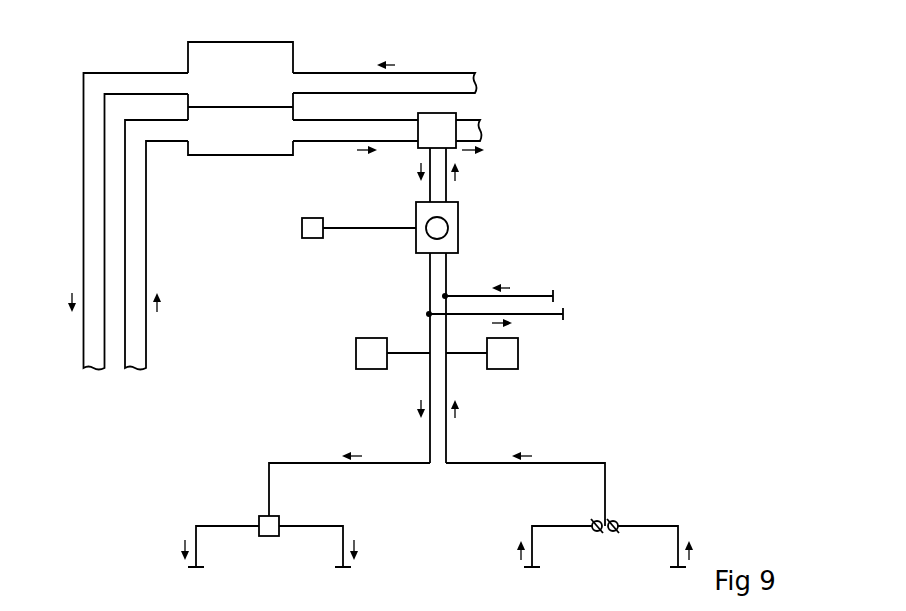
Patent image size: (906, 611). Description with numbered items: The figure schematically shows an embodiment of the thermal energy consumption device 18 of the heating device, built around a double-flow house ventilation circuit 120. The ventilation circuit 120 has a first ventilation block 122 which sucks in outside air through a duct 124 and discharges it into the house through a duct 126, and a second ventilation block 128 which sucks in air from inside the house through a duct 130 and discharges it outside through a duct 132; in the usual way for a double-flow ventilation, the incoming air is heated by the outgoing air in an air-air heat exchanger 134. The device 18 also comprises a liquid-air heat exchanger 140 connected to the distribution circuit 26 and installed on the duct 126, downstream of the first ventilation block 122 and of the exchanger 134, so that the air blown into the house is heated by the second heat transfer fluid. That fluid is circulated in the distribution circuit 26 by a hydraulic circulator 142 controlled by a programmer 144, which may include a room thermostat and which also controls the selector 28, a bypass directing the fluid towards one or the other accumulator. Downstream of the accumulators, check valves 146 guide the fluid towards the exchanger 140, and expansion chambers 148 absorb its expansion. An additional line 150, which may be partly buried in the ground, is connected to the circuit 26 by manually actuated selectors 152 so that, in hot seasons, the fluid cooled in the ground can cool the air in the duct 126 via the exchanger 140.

The thermal energy consumption device 18 is at (651, 166).
The distribution circuit 26 is at (600, 457).
The selector 28 is at (267, 536).
The double-flow house ventilation circuit 120 is at (284, 36).
The first ventilation block 122 is at (245, 142).
The duct 124 is at (147, 242).
The duct 126 is at (386, 118).
The second ventilation block 128 is at (221, 50).
The duct 130 is at (438, 73).
The duct 132 is at (83, 220).
The air-air heat exchanger 134 is at (262, 104).
The heat exchanger 140 is at (462, 150).
The hydraulic circulator 142 is at (458, 226).
The programmer 144 is at (312, 238).
The check valves 146 is at (590, 520).
The expansion chambers 148 is at (373, 369).
The additional line 150 is at (535, 296).
The selectors 152 is at (446, 294).